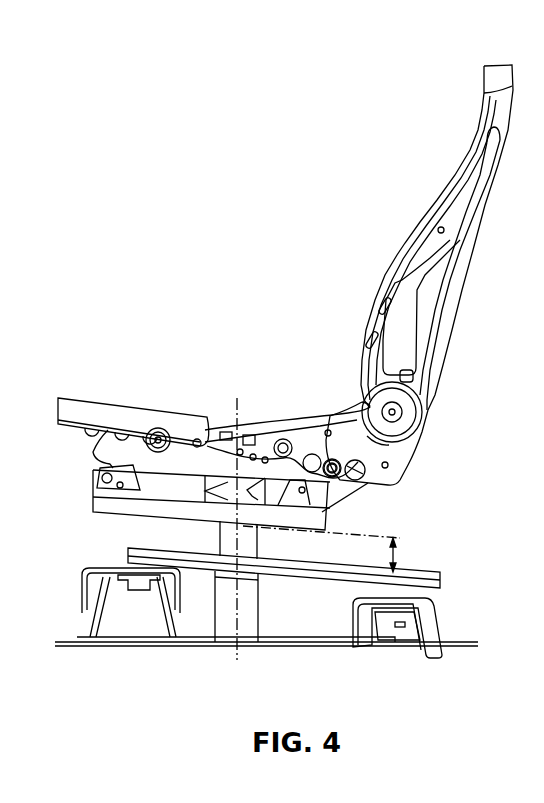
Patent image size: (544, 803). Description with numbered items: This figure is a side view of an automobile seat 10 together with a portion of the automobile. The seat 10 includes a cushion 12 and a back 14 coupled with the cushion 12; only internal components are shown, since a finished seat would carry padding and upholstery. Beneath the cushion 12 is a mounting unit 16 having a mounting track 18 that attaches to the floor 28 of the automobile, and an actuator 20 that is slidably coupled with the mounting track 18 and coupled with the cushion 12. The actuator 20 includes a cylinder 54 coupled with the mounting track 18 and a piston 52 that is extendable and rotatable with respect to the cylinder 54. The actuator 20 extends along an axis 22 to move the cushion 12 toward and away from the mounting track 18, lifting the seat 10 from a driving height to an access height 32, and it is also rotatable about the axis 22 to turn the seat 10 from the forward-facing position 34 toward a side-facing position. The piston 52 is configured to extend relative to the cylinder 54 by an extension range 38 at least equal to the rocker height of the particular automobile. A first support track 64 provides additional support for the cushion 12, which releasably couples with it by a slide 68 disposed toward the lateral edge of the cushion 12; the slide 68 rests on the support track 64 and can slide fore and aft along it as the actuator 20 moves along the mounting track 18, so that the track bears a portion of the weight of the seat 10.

The automobile seat 10 is at (277, 112).
The cushion 12 is at (210, 432).
The back 14 is at (408, 318).
The mounting unit 16 is at (170, 642).
The mounting track 18 is at (248, 647).
The actuator 20 is at (280, 621).
The axis 22 is at (237, 653).
The floor 28 is at (467, 643).
The access height 32 is at (433, 453).
The forward-facing position 34 is at (106, 386).
The extension range 38 is at (398, 556).
The piston 52 is at (225, 546).
The cylinder 54 is at (198, 633).
The first support track 64 is at (440, 585).
The slide 68 is at (306, 533).